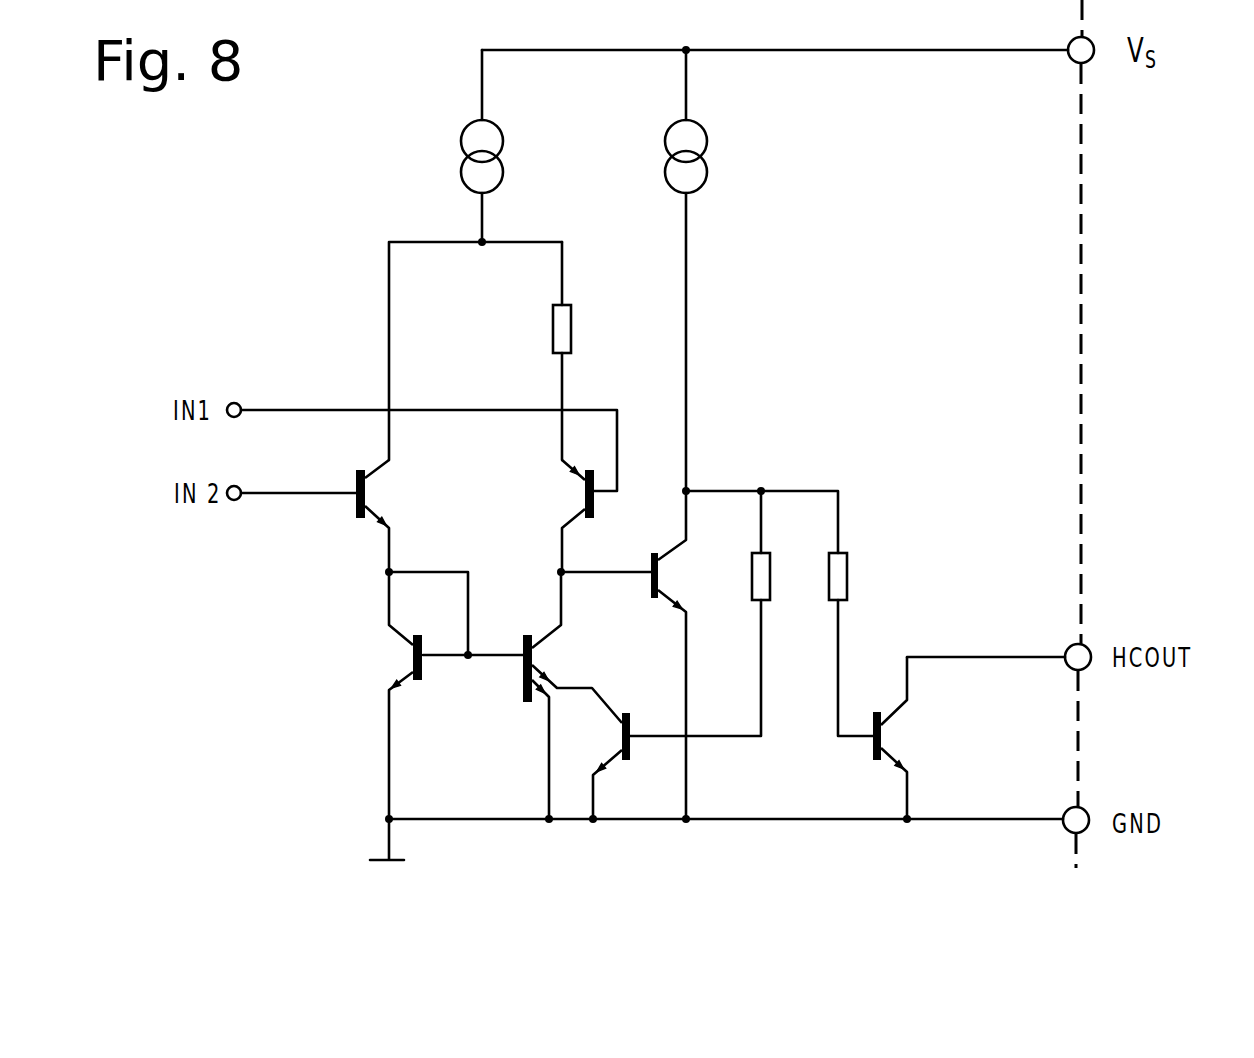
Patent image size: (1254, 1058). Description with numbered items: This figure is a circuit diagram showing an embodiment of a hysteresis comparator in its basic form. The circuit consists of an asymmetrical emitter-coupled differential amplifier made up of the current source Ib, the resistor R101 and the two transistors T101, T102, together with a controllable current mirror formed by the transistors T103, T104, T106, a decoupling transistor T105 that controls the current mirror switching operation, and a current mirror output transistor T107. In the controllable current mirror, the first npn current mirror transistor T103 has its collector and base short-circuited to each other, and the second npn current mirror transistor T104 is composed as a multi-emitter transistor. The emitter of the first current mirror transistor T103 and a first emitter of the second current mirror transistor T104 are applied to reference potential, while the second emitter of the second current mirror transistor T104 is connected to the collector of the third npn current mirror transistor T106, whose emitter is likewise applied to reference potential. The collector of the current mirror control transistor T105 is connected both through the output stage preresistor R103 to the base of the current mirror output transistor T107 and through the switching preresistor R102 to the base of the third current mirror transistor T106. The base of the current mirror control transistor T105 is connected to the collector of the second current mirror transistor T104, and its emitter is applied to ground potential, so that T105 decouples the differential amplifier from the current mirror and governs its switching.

The differential amplifier transistor T101 is at (391, 516).
The differential amplifier transistor T102 is at (555, 516).
The first current mirror transistor T103 is at (383, 695).
The second current mirror transistor T104 is at (572, 695).
The current mirror control transistor T105 is at (684, 655).
The third current mirror transistor T106 is at (598, 765).
The current mirror output transistor T107 is at (908, 738).
The resistor R101 is at (593, 328).
The switching preresistor R102 is at (790, 576).
The output stage preresistor R103 is at (867, 576).
The current source Ib is at (499, 156).